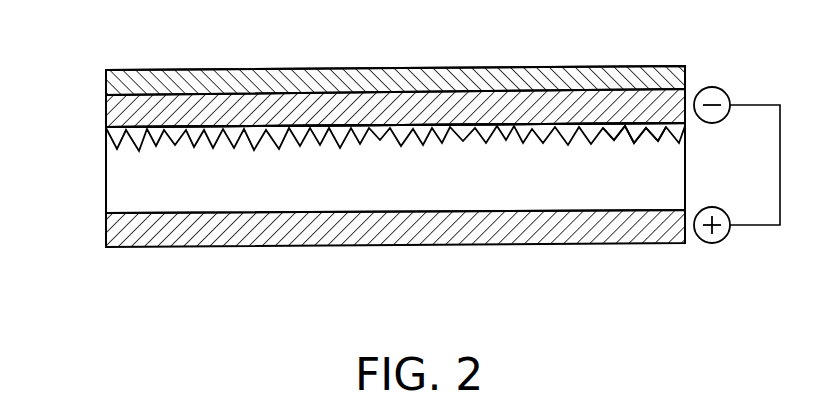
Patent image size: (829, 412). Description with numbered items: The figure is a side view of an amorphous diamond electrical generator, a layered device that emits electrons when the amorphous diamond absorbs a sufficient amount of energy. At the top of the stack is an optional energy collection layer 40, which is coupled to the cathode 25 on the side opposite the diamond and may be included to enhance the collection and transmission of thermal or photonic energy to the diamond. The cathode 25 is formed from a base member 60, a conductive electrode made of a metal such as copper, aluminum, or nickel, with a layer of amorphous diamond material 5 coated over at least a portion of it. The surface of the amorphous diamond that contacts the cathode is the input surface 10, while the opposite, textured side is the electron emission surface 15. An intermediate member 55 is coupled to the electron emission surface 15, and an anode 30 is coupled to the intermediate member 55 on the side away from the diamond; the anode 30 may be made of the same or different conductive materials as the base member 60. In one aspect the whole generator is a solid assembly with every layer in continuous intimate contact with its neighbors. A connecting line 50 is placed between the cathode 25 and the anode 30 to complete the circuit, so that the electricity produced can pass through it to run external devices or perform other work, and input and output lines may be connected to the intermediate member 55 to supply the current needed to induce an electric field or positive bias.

The cathode 25 is at (98, 97).
The energy collection layer 40 is at (578, 67).
The base member 60 is at (105, 112).
The input surface 10 is at (628, 114).
The amorphous diamond material 5 is at (106, 133).
The electron emission surface 15 is at (628, 153).
The intermediate member 55 is at (106, 190).
The anode 30 is at (106, 228).
The connecting line 50 is at (745, 104).